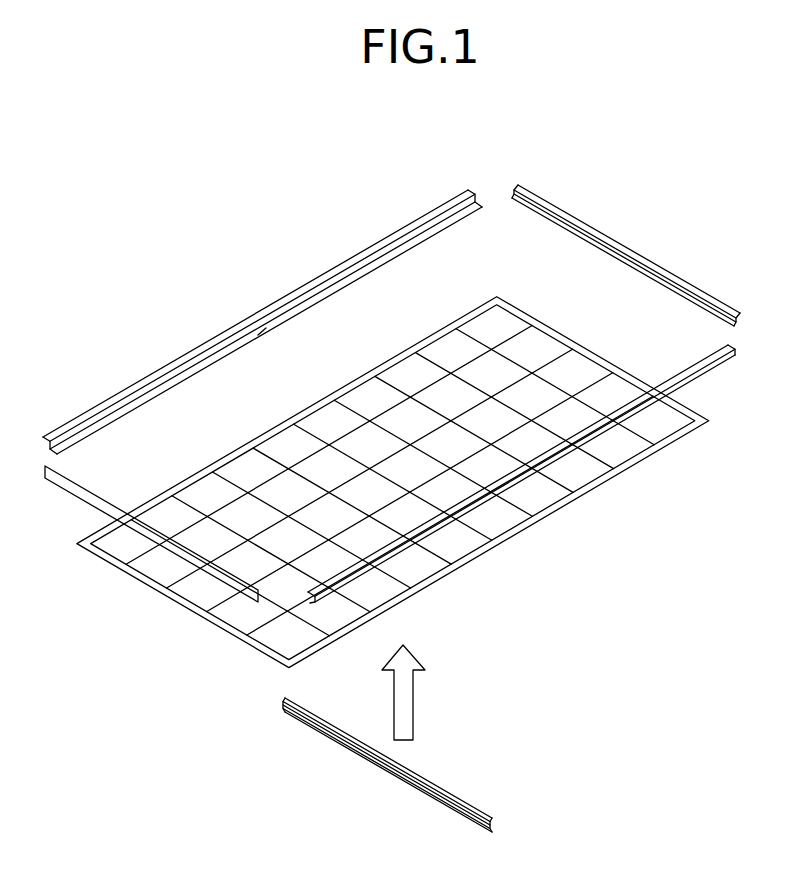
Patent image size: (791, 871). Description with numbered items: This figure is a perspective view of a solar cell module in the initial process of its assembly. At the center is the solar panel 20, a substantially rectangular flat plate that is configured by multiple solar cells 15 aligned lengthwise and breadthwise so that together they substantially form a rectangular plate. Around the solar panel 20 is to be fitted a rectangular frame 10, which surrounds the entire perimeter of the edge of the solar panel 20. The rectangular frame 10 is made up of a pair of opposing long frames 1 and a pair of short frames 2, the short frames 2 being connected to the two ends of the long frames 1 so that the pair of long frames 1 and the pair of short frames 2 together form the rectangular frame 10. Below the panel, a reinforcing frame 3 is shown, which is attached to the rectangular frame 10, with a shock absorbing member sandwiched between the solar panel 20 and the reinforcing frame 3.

The long frame 1 is at (325, 273).
The short frame 2 is at (172, 555).
The reinforcing frame 3 is at (395, 777).
The rectangular frame 10 is at (387, 237).
The solar cell 15 is at (418, 571).
The solar panel 20 is at (497, 295).